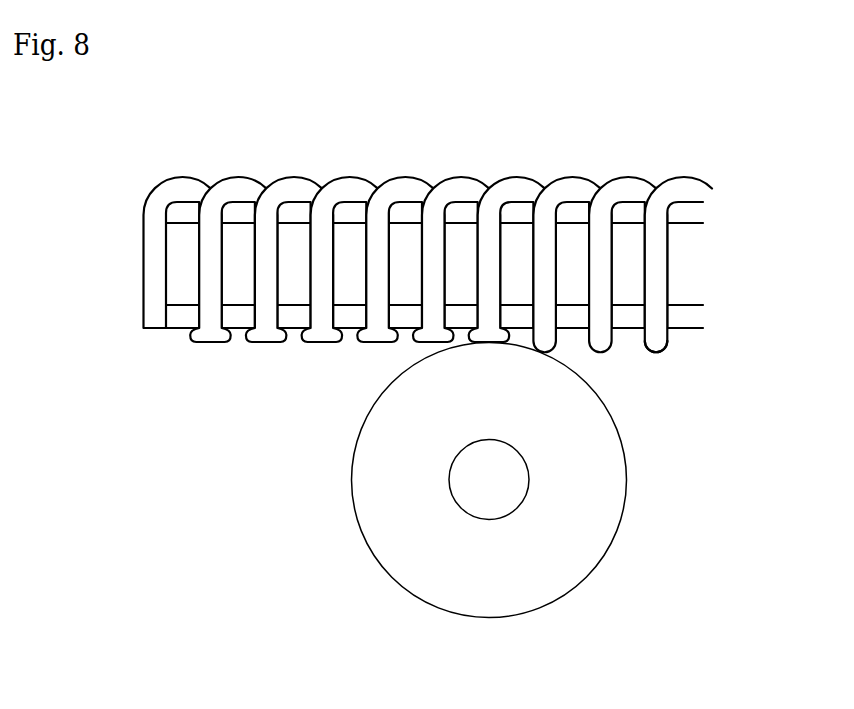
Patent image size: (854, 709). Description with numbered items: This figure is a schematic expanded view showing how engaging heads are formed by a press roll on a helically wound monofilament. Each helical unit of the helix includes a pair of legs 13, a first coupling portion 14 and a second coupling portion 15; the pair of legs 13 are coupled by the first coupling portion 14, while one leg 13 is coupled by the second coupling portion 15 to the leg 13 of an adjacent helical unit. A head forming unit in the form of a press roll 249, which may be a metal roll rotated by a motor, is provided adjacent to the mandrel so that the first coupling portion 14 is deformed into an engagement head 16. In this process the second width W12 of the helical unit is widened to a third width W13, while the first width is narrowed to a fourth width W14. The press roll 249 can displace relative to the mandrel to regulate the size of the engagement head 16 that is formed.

The leg 13 is at (660, 278).
The first coupling portion 14 is at (663, 342).
The second coupling portion 15 is at (462, 268).
The engagement head 16 is at (267, 335).
The press roll 249 is at (505, 578).
The second width W12 is at (645, 352).
The third width W13 is at (190, 342).
The fourth width W14 is at (190, 342).